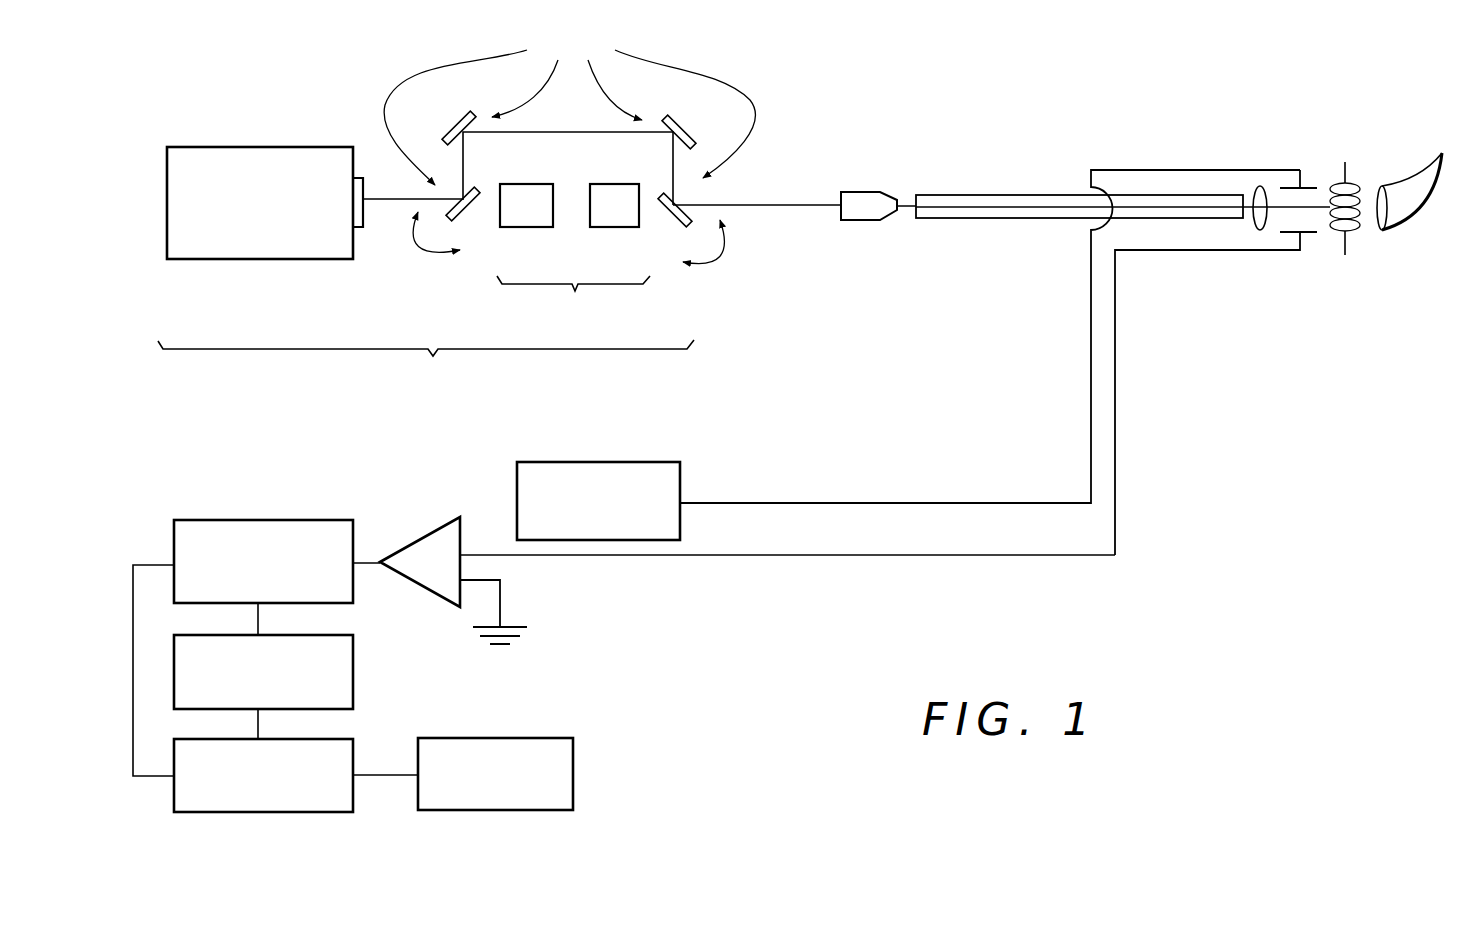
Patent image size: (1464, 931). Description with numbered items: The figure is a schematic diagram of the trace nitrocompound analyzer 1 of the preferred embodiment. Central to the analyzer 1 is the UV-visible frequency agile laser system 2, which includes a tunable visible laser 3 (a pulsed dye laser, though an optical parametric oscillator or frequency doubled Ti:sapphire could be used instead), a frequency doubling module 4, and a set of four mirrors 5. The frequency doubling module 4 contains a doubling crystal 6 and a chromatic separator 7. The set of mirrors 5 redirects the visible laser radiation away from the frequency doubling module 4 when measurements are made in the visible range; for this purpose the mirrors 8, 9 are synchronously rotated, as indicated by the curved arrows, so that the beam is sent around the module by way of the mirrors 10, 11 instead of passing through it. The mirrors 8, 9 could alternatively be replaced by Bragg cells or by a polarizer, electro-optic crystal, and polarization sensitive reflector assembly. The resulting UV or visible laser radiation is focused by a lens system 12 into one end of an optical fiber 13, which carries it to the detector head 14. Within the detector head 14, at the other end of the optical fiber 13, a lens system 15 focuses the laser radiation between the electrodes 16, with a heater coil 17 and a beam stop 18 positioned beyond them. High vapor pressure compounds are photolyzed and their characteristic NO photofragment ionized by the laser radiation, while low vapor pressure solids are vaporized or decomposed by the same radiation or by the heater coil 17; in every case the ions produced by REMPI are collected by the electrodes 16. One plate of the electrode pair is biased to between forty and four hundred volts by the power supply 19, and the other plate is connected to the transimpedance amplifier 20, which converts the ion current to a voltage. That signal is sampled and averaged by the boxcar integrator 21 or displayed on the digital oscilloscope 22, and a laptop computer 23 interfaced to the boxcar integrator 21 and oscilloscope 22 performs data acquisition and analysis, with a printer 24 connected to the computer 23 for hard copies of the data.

The trace nitrocompound analyzer 1 is at (1178, 595).
The UV-visible frequency agile laser system 2 is at (426, 364).
The tunable visible laser 3 is at (194, 147).
The frequency doubling module 4 is at (573, 300).
The set of four mirrors 5 is at (569, 118).
The doubling crystal 6 is at (527, 228).
The chromatic separator 7 is at (614, 228).
The mirror 8 is at (470, 215).
The mirror 9 is at (668, 216).
The mirror 10 is at (449, 131).
The mirror 11 is at (688, 132).
The lens system 12 is at (874, 222).
The optical fiber 13 is at (1024, 222).
The detector head 14 is at (962, 323).
The lens system 15 is at (1250, 234).
The electrodes 16 is at (1315, 242).
The heater coil 17 is at (1350, 188).
The beam stop 18 is at (1420, 192).
The power supply 19 is at (647, 462).
The transimpedance amplifier 20 is at (418, 530).
The boxcar integrator 21 is at (278, 520).
The digital oscilloscope 22 is at (355, 670).
The laptop computer 23 is at (355, 739).
The printer 24 is at (562, 738).